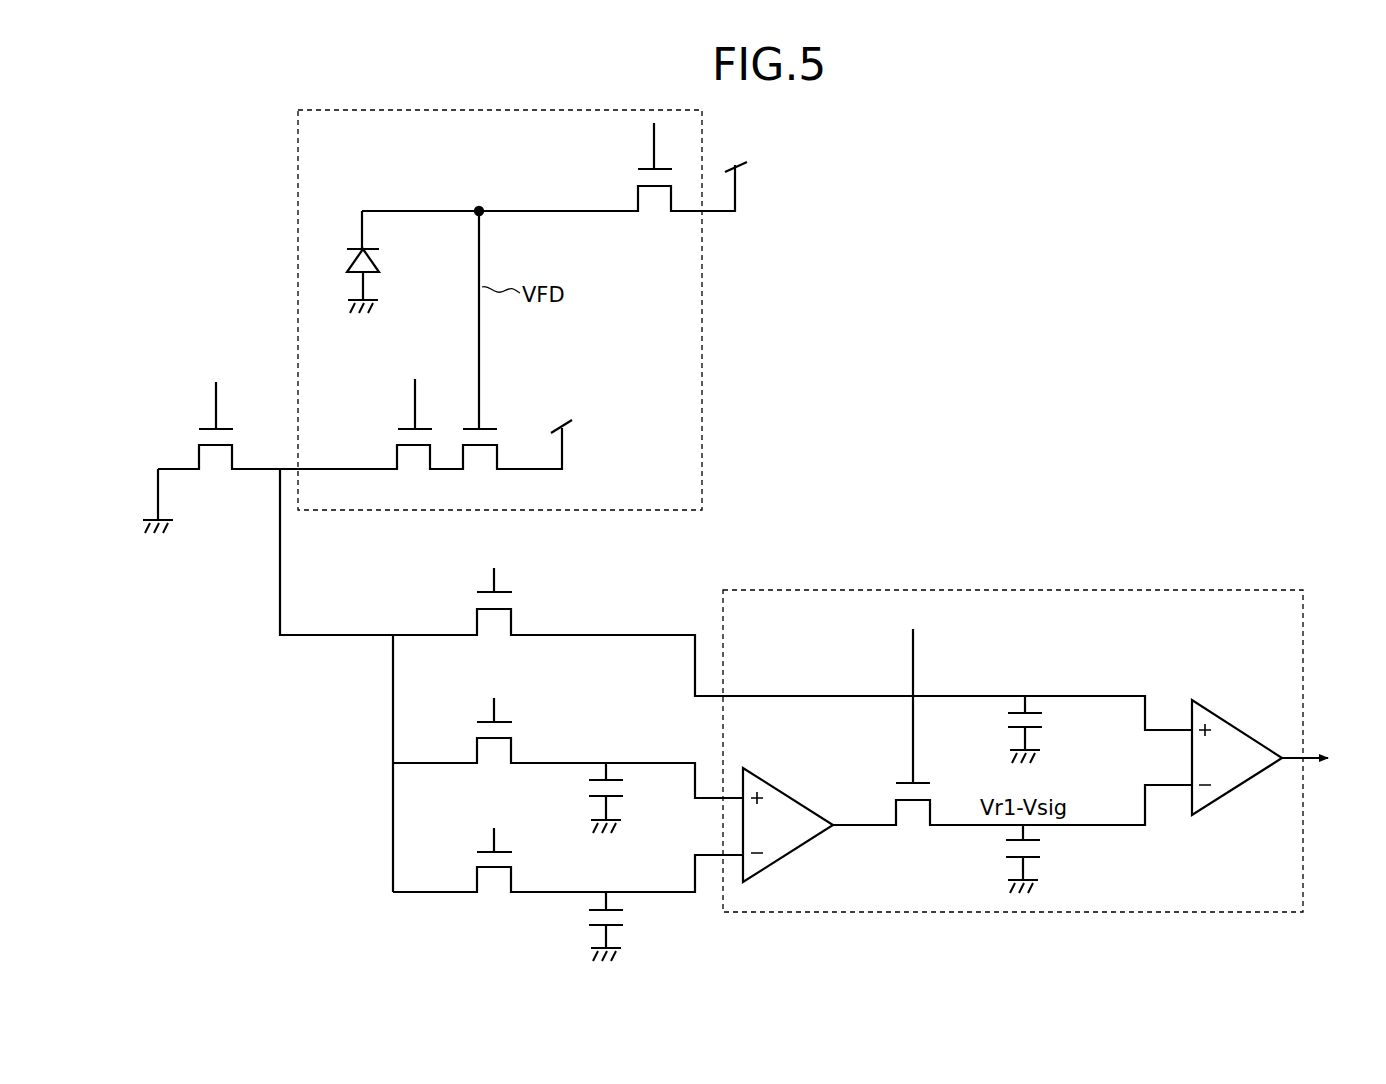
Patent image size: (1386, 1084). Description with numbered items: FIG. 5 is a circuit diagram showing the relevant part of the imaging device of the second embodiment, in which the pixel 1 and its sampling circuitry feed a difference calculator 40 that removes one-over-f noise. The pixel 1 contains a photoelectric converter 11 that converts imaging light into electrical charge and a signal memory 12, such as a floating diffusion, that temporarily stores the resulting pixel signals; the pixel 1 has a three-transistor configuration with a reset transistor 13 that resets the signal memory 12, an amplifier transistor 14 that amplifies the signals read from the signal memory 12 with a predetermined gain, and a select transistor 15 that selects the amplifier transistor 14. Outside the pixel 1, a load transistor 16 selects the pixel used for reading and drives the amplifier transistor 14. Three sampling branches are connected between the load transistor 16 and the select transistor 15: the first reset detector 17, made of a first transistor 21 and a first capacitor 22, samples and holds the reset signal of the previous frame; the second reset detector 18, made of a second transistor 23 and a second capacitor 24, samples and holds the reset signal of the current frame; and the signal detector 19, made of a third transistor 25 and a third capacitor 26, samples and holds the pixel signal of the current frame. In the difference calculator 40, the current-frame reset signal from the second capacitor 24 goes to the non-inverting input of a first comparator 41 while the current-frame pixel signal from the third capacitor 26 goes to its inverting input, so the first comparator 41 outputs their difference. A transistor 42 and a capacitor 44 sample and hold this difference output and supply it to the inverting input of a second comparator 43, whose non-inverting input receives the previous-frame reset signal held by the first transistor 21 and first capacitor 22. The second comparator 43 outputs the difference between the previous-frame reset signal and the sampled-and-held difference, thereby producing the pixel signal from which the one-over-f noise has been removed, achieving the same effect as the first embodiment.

The pixel 1 is at (298, 140).
The photoelectric converter 11 is at (346, 236).
The signal memory 12 is at (504, 191).
The reset transistor 13 is at (664, 254).
The amplifier transistor 14 is at (497, 409).
The select transistor 15 is at (386, 437).
The load transistor 16 is at (196, 414).
The first reset detector 17 is at (557, 644).
The second reset detector 18 is at (558, 774).
The signal detector 19 is at (558, 902).
The first transistor 21 is at (477, 620).
The first capacitor 22 is at (1013, 732).
The second transistor 23 is at (477, 750).
The second capacitor 24 is at (615, 798).
The third transistor 25 is at (477, 877).
The third capacitor 26 is at (615, 927).
The difference calculator 40 is at (1135, 588).
The first comparator 41 is at (792, 796).
The transistor 42 is at (893, 812).
The second comparator 43 is at (1252, 733).
The capacitor 44 is at (1015, 857).